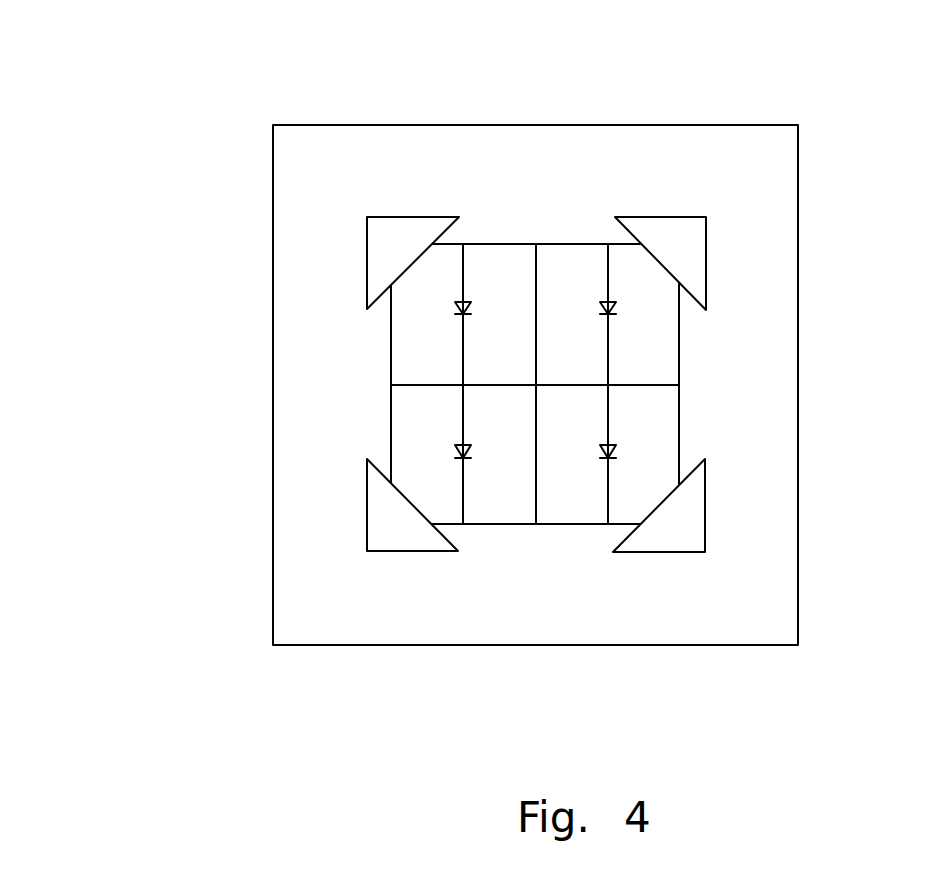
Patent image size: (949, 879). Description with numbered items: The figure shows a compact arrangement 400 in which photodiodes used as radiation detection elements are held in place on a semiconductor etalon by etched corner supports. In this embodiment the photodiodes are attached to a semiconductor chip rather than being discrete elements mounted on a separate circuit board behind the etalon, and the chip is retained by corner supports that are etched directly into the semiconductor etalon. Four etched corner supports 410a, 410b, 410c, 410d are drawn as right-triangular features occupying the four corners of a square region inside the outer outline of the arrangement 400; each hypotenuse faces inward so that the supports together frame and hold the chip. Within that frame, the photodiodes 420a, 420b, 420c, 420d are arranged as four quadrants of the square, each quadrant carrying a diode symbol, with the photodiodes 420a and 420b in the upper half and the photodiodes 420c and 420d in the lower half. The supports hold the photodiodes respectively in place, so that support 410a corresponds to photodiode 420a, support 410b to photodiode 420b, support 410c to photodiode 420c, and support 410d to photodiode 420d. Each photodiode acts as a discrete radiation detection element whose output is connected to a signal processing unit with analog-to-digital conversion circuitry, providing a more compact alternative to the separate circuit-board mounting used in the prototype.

The photodetector device 400 is at (822, 339).
The etched corner support 410a is at (365, 526).
The etched corner support 410b is at (365, 242).
The etched corner support 410c is at (675, 217).
The etched corner support 410d is at (688, 552).
The photodiode 420a is at (507, 244).
The photodiode 420b is at (572, 244).
The photodiode 420c is at (505, 524).
The photodiode 420d is at (568, 524).